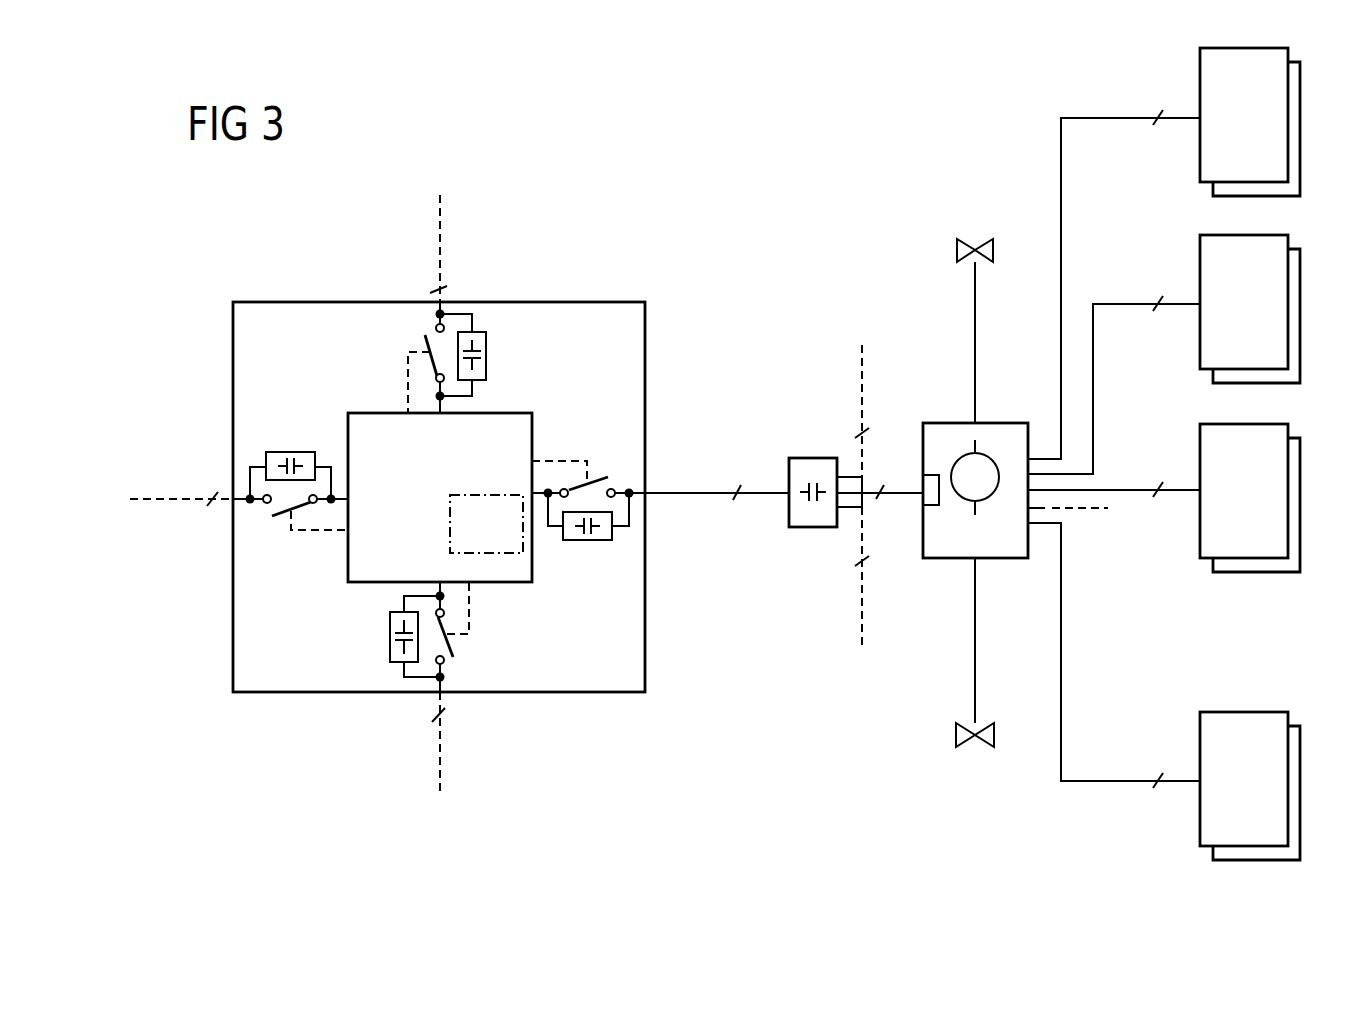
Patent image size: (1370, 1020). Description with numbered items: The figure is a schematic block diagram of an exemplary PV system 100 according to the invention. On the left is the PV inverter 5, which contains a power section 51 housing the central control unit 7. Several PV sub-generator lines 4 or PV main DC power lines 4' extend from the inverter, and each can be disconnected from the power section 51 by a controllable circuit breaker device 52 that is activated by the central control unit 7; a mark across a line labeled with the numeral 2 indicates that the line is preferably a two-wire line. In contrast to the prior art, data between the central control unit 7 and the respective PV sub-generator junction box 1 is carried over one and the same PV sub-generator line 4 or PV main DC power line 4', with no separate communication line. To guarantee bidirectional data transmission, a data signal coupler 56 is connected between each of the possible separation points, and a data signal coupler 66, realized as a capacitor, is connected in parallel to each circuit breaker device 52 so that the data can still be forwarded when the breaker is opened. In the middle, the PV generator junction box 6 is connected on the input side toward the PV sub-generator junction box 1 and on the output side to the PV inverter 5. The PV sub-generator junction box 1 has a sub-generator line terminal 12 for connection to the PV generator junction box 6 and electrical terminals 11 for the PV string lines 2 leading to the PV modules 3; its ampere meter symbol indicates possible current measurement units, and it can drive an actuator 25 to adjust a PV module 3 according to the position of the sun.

The PV system 100 is at (765, 205).
The PV sub-generator junction box 1 is at (948, 422).
The PV string line 2 is at (1122, 779).
The PV module 3 is at (1290, 50).
The PV sub-generator line 4 is at (518, 495).
The PV main DC power line 4' is at (452, 495).
The PV inverter 5 is at (648, 325).
The PV generator junction box 6 is at (813, 455).
The central control unit 7 is at (490, 495).
The electrical terminal 11 is at (1030, 455).
The sub-generator line terminal 12 is at (925, 471).
The actuator 25 is at (975, 238).
The power section 51 is at (540, 416).
The controllable circuit breaker device 52 is at (424, 351).
The data signal coupler 56 is at (446, 495).
The data signal coupler 66 is at (490, 348).